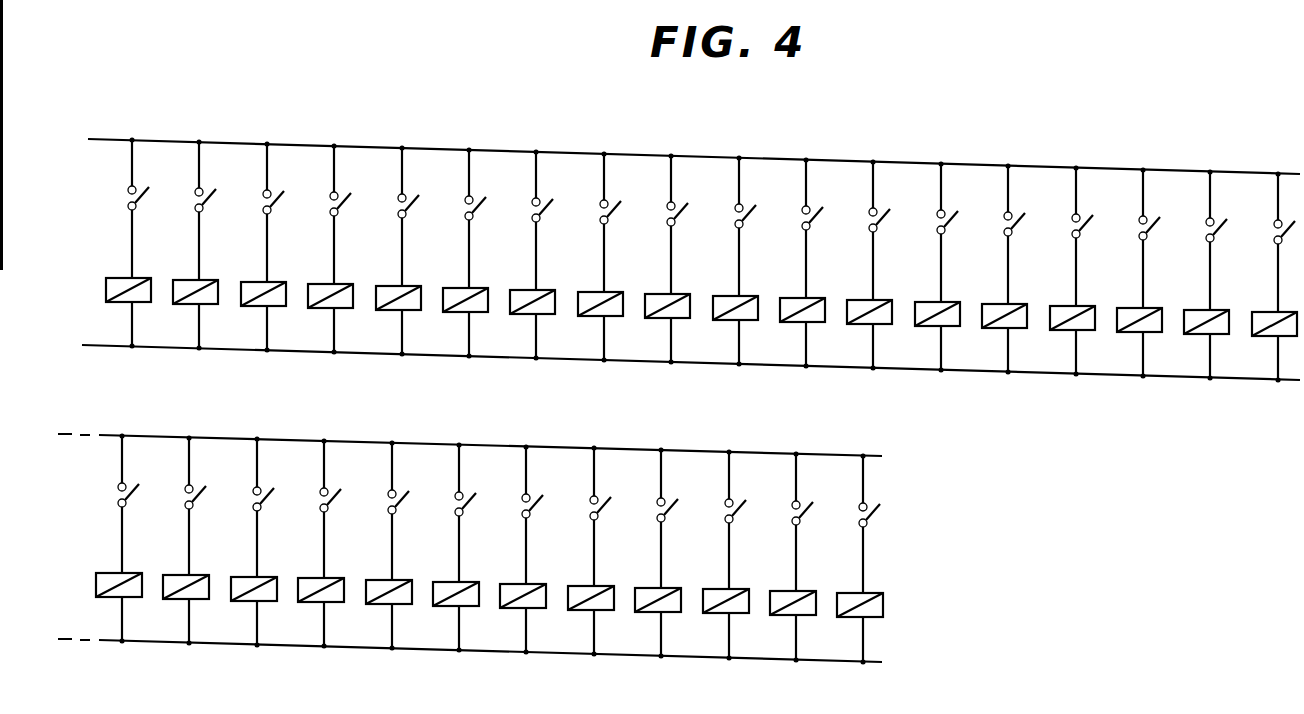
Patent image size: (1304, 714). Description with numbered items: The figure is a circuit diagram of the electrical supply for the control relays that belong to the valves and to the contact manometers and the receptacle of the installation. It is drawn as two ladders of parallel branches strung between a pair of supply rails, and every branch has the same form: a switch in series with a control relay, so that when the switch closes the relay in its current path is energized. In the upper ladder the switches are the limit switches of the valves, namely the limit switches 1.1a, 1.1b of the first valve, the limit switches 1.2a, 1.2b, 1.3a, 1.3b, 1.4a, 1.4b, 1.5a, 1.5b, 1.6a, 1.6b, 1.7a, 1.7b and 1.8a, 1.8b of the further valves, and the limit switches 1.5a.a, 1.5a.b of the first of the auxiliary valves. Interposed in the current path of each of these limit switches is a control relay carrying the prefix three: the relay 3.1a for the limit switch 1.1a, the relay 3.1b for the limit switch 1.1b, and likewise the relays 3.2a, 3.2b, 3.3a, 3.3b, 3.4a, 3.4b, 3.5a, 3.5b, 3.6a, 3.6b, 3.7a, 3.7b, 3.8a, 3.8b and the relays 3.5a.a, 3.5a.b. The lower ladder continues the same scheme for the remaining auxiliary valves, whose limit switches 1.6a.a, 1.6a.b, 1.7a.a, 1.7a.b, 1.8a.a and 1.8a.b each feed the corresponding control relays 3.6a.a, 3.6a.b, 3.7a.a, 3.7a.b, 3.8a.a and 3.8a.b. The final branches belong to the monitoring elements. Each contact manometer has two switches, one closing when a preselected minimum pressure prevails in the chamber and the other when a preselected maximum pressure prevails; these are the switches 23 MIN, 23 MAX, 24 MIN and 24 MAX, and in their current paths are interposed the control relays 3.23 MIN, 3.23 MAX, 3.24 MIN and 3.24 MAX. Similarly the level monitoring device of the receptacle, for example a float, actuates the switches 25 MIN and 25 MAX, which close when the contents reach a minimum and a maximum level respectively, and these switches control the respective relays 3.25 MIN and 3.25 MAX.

The limit switch 1.1a is at (98, 201).
The limit switch 1.1b is at (165, 203).
The limit switch 1.2a is at (233, 205).
The limit switch 1.2b is at (300, 207).
The limit switch 1.3a is at (368, 209).
The limit switch 1.3b is at (435, 211).
The limit switch 1.4a is at (502, 213).
The limit switch 1.4b is at (570, 215).
The limit switch 1.5a is at (637, 217).
The limit switch 1.5b is at (705, 219).
The limit switch 1.6a is at (772, 221).
The limit switch 1.6b is at (839, 223).
The limit switch 1.7a is at (907, 225).
The limit switch 1.7b is at (974, 227).
The limit switch 1.8a is at (1042, 229).
The limit switch 1.8b is at (1109, 231).
The limit switch 1.5a.a is at (1176, 233).
The limit switch 1.5a.b is at (1244, 235).
The control relay 3.1a is at (123, 305).
The control relay 3.1b is at (190, 307).
The control relay 3.2a is at (258, 309).
The control relay 3.2b is at (325, 311).
The control relay 3.3a is at (393, 313).
The control relay 3.3b is at (460, 315).
The control relay 3.4a is at (527, 317).
The control relay 3.4b is at (595, 319).
The control relay 3.5a is at (662, 321).
The control relay 3.5b is at (730, 323).
The control relay 3.6a is at (797, 325).
The control relay 3.6b is at (864, 327).
The control relay 3.7a is at (932, 329).
The control relay 3.7b is at (999, 331).
The control relay 3.8a is at (1067, 333).
The control relay 3.8b is at (1134, 335).
The control relay 3.5a.a is at (1201, 337).
The control relay 3.5a.b is at (1269, 339).
The limit switch 1.6a.a is at (118, 506).
The limit switch 1.6a.b is at (185, 508).
The limit switch 1.7a.a is at (253, 510).
The limit switch 1.7a.b is at (320, 511).
The limit switch 1.8a.a is at (388, 513).
The limit switch 1.8a.b is at (455, 515).
The minimum pressure switch 23 MIN is at (522, 511).
The maximum pressure switch 23 MAX is at (590, 513).
The minimum pressure switch 24 MIN is at (657, 515).
The maximum pressure switch 24 MAX is at (725, 516).
The minimum level switch 25 MIN is at (792, 518).
The maximum level switch 25 MAX is at (859, 520).
The control relay 3.6a.a is at (78, 597).
The control relay 3.6a.b is at (145, 599).
The control relay 3.7a.a is at (213, 601).
The control relay 3.7a.b is at (280, 602).
The control relay 3.8a.a is at (348, 604).
The control relay 3.8a.b is at (415, 606).
The control relay 3.23 MIN is at (501, 605).
The control relay 3.23 MAX is at (569, 607).
The control relay 3.24 MIN is at (636, 609).
The control relay 3.24 MAX is at (704, 610).
The control relay 3.25 MIN is at (771, 612).
The control relay 3.25 MAX is at (838, 614).